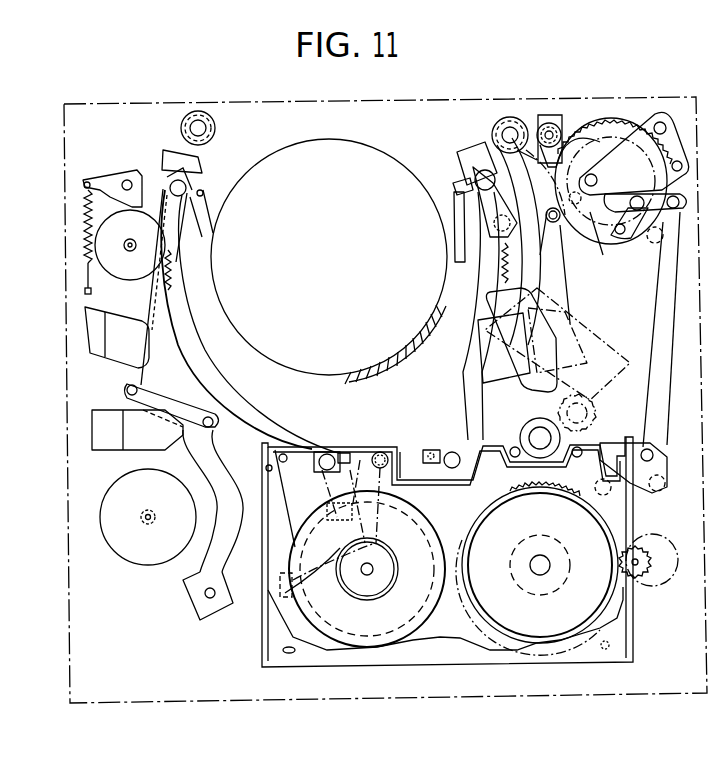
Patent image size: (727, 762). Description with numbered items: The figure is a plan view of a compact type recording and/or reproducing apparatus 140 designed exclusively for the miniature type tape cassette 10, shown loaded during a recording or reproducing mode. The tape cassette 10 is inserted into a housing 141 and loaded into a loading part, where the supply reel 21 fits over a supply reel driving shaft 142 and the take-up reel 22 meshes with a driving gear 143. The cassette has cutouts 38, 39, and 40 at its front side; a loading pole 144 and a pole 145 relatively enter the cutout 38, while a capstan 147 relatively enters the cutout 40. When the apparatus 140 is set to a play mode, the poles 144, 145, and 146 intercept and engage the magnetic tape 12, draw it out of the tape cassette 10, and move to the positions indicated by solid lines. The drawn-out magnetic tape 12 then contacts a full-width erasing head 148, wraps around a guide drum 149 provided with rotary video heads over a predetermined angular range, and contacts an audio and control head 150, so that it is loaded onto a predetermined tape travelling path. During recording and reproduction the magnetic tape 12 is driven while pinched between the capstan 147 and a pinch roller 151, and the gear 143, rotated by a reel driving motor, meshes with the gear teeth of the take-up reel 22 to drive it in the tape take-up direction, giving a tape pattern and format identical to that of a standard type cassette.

The tape cassette 10 is at (448, 660).
The magnetic tape 12 is at (155, 313).
The supply reel 21 is at (290, 617).
The take-up reel 22 is at (538, 628).
The cutout 38 is at (360, 460).
The cutout 39 is at (412, 458).
The cutout 40 is at (515, 487).
The recording and/or reproducing apparatus 140 is at (586, 88).
The housing 141 is at (633, 647).
The supply reel driving shaft 142 is at (371, 593).
The driving gear 143 is at (637, 577).
The loading pole 144 is at (190, 183).
The pole 145 is at (380, 456).
The pole 146 is at (478, 178).
The capstan 147 is at (458, 414).
The full-width erasing head 148 is at (120, 363).
The guide drum 149 is at (286, 149).
The audio and control head 150 is at (573, 307).
The pinch roller 151 is at (550, 420).